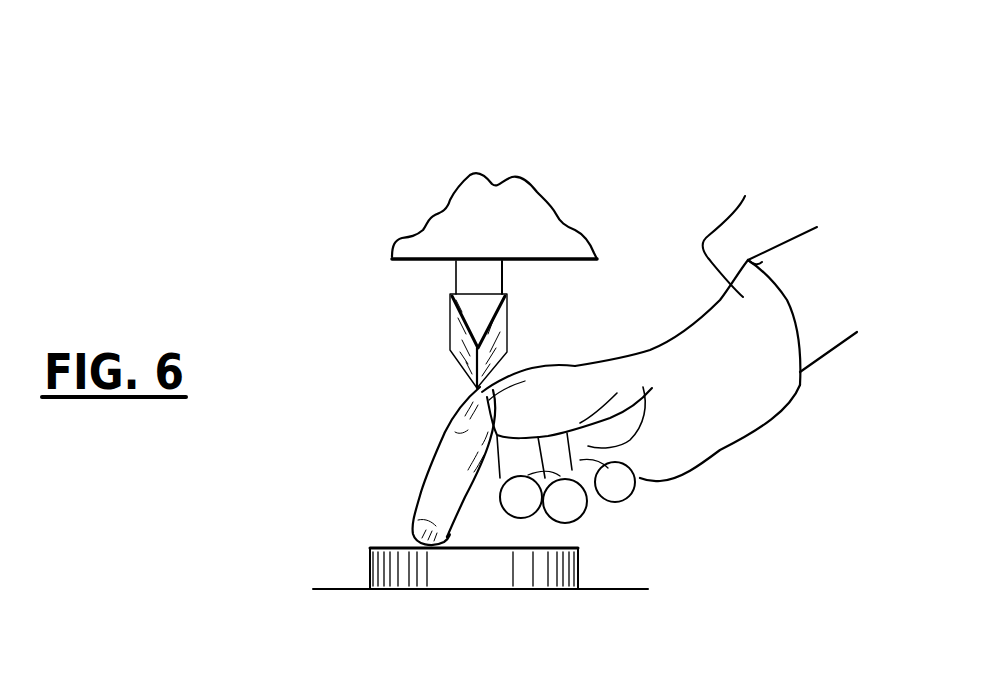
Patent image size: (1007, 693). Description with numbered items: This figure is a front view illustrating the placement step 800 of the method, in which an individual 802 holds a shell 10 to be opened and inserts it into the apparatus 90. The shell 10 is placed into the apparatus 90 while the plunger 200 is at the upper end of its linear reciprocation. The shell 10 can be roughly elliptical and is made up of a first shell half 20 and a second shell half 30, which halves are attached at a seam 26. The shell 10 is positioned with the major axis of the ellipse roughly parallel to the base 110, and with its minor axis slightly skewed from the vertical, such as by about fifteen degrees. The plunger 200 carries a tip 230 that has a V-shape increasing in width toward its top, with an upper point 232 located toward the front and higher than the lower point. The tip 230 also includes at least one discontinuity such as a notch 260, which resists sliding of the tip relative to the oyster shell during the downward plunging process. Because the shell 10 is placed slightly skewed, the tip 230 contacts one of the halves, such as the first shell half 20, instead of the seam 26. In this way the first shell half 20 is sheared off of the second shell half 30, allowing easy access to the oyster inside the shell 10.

The placement step 800 is at (287, 55).
The apparatus 90 is at (494, 166).
The plunger 200 is at (483, 290).
The tip 230 is at (462, 294).
The upper point 232 is at (468, 342).
The notch 260 is at (508, 376).
The first shell half 20 is at (440, 452).
The shell 10 is at (432, 463).
The seam 26 is at (417, 497).
The second shell half 30 is at (470, 504).
The individual 802 is at (745, 196).
The base 110 is at (452, 580).